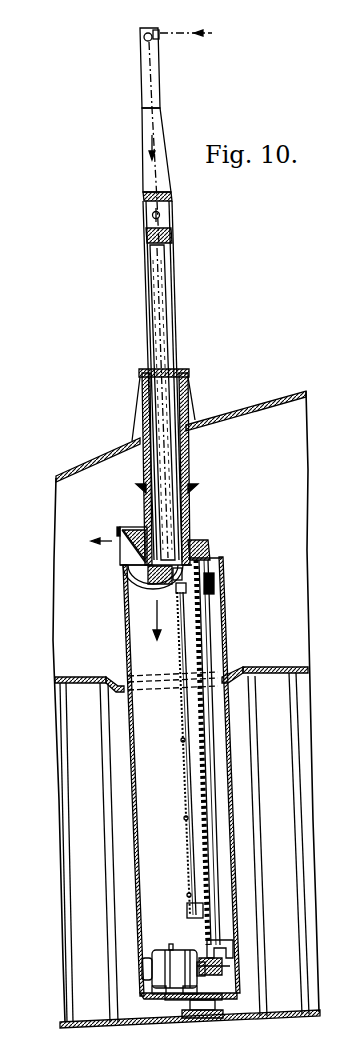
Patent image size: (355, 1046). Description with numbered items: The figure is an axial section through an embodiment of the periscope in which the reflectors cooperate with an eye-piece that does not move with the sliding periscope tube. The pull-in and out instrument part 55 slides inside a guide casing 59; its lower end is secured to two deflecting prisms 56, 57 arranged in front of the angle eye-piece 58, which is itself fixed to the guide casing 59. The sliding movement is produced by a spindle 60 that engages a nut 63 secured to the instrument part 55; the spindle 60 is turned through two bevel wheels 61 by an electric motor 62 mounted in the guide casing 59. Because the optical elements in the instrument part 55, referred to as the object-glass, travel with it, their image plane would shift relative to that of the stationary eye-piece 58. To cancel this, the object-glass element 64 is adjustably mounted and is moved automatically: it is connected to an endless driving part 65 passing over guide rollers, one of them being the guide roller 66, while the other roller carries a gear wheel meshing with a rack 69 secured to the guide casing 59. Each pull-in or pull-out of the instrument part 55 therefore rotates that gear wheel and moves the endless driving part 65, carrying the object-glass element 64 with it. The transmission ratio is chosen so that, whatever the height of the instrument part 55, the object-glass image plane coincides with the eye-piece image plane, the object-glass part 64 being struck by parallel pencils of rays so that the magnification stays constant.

The pull-in and out instrument part 55 is at (146, 331).
The deflecting prism 56 is at (140, 577).
The deflecting prism 57 is at (126, 575).
The angle eye-piece 58 is at (124, 548).
The guide casing 59 is at (133, 819).
The spindle 60 is at (212, 846).
The bevel wheels 61 is at (213, 972).
The electric motor 62 is at (176, 966).
The nut 63 is at (214, 590).
The object-glass element 64 is at (147, 236).
The endless driving part 65 is at (158, 292).
The guide roller 66 is at (152, 216).
The rack 69 is at (185, 740).